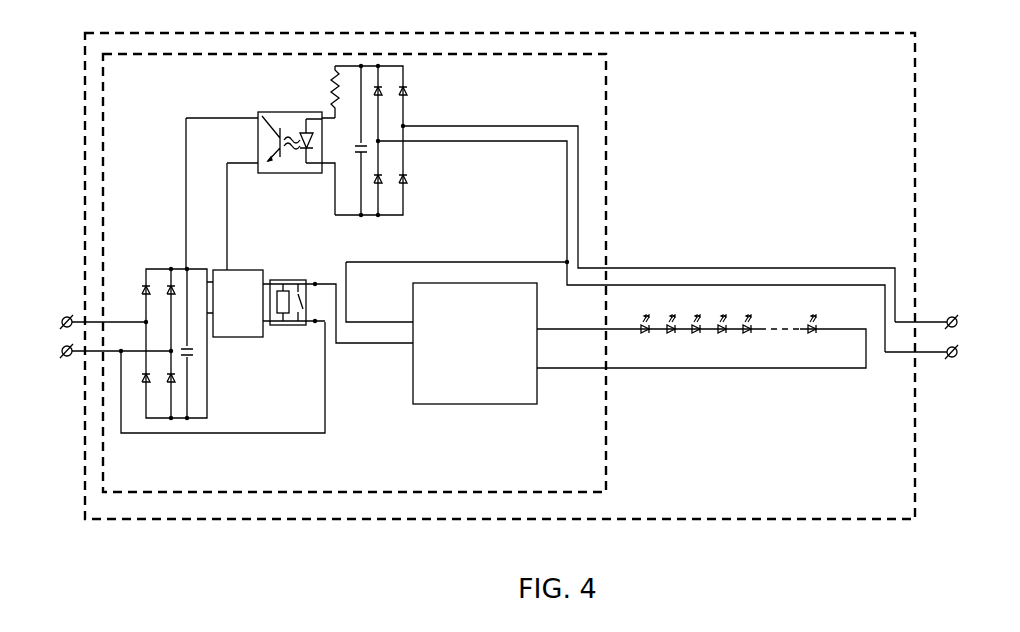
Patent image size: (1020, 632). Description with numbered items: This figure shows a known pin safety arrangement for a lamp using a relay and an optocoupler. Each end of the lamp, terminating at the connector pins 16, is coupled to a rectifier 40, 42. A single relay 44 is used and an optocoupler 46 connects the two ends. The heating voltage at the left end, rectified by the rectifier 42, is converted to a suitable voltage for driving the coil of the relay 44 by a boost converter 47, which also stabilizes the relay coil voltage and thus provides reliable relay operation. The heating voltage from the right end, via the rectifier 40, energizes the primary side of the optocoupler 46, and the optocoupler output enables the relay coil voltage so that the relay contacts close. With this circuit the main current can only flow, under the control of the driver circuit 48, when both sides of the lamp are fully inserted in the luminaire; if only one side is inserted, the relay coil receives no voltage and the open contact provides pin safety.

The electrical connector 16 is at (67, 297).
The rectifier 40 is at (408, 111).
The rectifier 42 is at (160, 267).
The relay 44 is at (300, 331).
The optocoupler 46 is at (256, 110).
The boost converter 47 is at (255, 340).
The driver circuit 48 is at (487, 364).